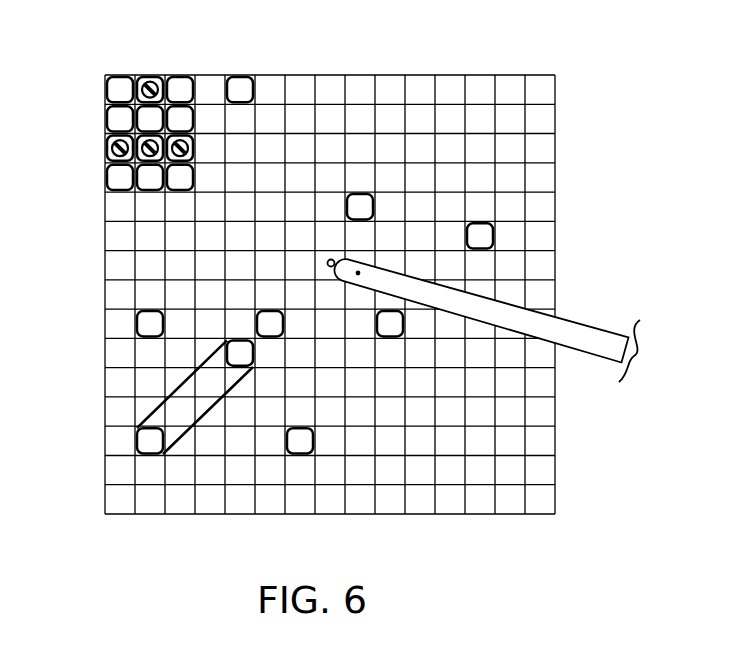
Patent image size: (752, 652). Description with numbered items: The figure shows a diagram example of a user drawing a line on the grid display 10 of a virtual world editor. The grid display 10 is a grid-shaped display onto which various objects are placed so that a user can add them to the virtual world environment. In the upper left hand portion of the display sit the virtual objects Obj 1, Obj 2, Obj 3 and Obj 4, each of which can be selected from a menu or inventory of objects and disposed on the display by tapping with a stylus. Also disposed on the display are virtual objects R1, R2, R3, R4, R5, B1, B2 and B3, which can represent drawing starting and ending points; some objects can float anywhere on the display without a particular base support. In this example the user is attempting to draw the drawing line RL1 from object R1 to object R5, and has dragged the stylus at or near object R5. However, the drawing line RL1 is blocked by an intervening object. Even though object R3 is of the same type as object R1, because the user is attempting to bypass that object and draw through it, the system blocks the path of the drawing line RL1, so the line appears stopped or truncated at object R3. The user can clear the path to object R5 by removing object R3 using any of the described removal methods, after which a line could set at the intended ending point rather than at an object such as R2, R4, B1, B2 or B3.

The grid display 10 is at (517, 75).
The virtual object Obj 1 is at (113, 88).
The virtual object Obj 2 is at (108, 152).
The virtual object Obj 3 is at (150, 187).
The virtual object Obj 4 is at (194, 148).
The virtual object B1 is at (136, 331).
The virtual object B2 is at (403, 334).
The virtual object B3 is at (254, 87).
The virtual object R1 is at (136, 446).
The virtual object R2 is at (293, 454).
The virtual object R3 is at (280, 311).
The virtual object R4 is at (494, 236).
The virtual object R5 is at (370, 194).
The drawing line RL1 is at (188, 398).